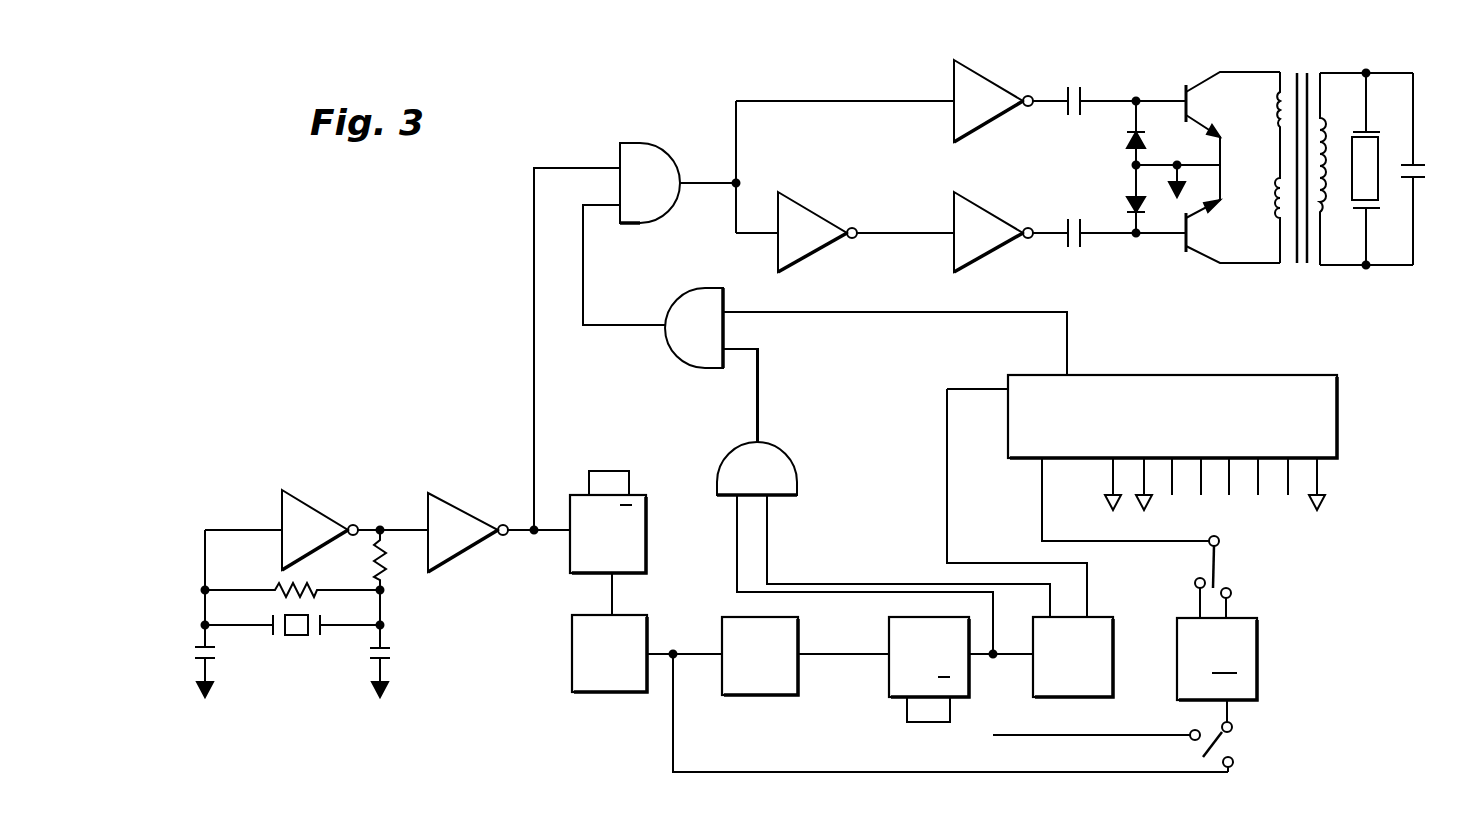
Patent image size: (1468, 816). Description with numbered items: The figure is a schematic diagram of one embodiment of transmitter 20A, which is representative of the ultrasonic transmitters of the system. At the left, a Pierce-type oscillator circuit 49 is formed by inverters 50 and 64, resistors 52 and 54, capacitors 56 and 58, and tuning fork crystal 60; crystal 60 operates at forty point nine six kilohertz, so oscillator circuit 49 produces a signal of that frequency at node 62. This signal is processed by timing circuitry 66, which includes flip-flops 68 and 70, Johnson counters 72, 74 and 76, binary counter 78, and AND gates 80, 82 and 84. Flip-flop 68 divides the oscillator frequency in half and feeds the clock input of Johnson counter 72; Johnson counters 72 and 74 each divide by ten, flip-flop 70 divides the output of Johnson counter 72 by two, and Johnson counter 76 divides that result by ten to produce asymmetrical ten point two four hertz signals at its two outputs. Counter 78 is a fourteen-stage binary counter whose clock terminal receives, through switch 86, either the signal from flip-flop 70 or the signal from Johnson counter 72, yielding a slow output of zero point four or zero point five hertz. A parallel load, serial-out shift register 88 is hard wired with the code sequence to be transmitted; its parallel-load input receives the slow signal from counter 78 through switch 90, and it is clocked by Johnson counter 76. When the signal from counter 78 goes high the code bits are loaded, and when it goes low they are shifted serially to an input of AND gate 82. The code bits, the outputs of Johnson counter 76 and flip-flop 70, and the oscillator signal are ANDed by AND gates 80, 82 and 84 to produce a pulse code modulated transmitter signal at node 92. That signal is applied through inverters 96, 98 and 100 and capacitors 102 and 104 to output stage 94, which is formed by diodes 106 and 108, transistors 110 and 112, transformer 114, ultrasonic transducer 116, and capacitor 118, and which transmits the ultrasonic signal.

The transmitter 20A is at (480, 352).
The Pierce-type oscillator circuit 49 is at (373, 495).
The inverter 50 is at (303, 502).
The resistor 52 is at (312, 590).
The resistor 54 is at (386, 575).
The capacitor 56 is at (215, 660).
The capacitor 58 is at (370, 662).
The tuning fork crystal 60 is at (295, 636).
The node 62 is at (533, 540).
The inverter 64 is at (488, 516).
The timing circuitry 66 is at (653, 708).
The flip-flop 68 is at (646, 498).
The flip-flop 70 is at (885, 692).
The Johnson counter 72 is at (572, 645).
The Johnson counter 74 is at (748, 712).
The Johnson counter 76 is at (1113, 650).
The binary counter 78 is at (1257, 665).
The AND gate 80 is at (780, 455).
The AND gate 82 is at (678, 343).
The AND gate 84 is at (658, 158).
The switch 86 is at (1222, 750).
The parallel load, serial-out shift register 88 is at (1273, 380).
The switch 90 is at (1218, 560).
The node 92 is at (740, 178).
The output stage 94 is at (1293, 62).
The inverter 96 is at (810, 215).
The inverter 98 is at (985, 212).
The inverter 100 is at (998, 90).
The capacitor 102 is at (1086, 98).
The capacitor 104 is at (1066, 224).
The diode 106 is at (1148, 140).
The diode 108 is at (1126, 203).
The transistor 110 is at (1192, 86).
The transistor 112 is at (1205, 255).
The transformer 114 is at (1300, 265).
The ultrasonic transducer 116 is at (1368, 130).
The capacitor 118 is at (1416, 165).